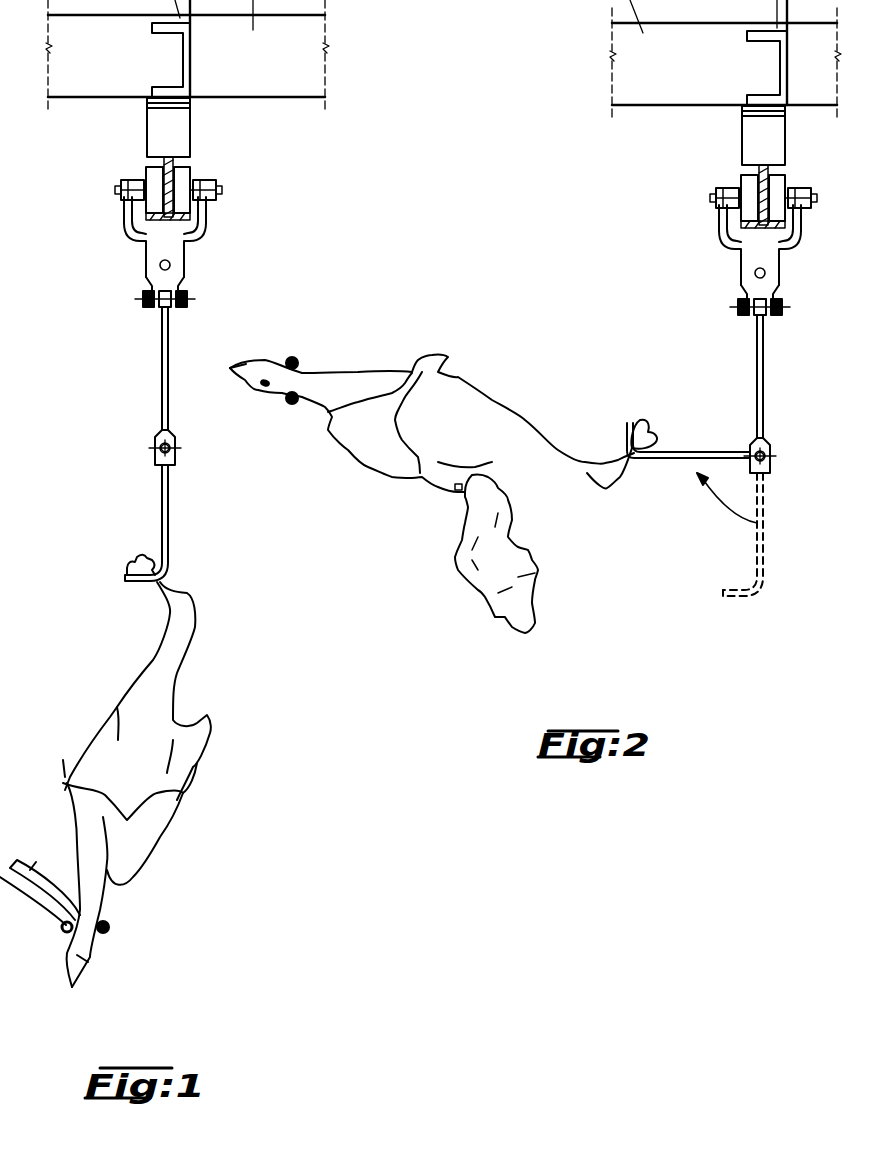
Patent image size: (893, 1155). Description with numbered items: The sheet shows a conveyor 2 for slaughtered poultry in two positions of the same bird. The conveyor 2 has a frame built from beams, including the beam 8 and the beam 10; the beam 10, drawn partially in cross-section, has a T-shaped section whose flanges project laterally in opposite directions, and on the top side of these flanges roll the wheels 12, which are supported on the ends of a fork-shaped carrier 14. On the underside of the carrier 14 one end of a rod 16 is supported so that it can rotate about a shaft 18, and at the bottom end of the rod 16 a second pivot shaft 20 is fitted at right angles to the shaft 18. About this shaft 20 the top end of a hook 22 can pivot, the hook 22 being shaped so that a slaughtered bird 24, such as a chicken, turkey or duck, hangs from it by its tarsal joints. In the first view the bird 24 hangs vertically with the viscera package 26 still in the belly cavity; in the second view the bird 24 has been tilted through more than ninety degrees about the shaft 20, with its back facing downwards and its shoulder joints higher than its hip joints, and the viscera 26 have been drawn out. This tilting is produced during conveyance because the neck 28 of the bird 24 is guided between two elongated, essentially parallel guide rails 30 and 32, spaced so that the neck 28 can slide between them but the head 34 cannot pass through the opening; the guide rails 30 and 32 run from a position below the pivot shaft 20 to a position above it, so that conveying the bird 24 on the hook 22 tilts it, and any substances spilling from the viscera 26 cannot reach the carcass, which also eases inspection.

In FIG. 1, the conveyor 2 is at (332, 165).
In FIG. 2, the conveyor 2 is at (578, 165).
In FIG. 1, the beam 8 is at (211, 127).
In FIG. 2, the beam 8 is at (698, 135).
In FIG. 1, the beam 10 is at (109, 170).
In FIG. 2, the beam 10 is at (690, 191).
In FIG. 1, the wheels 12 is at (167, 190).
In FIG. 2, the wheels 12 is at (714, 201).
In FIG. 1, the fork-shaped carrier 14 is at (205, 244).
In FIG. 2, the fork-shaped carrier 14 is at (706, 252).
In FIG. 1, the rod 16 is at (107, 368).
In FIG. 2, the rod 16 is at (687, 376).
In FIG. 1, the shaft 18 is at (120, 301).
In FIG. 2, the shaft 18 is at (701, 302).
In FIG. 1, the second pivot shaft 20 is at (113, 423).
In FIG. 2, the second pivot shaft 20 is at (694, 427).
In FIG. 1, the hook 22 is at (107, 523).
In FIG. 2, the hook 22 is at (687, 509).
In FIG. 1, the slaughtered bird 24 is at (265, 735).
In FIG. 2, the slaughtered bird 24 is at (415, 320).
In FIG. 2, the viscera package 26 is at (535, 573).
In FIG. 1, the neck 28 is at (100, 922).
In FIG. 2, the neck 28 is at (300, 377).
In FIG. 1, the guide rail 30 is at (40, 917).
In FIG. 2, the guide rail 30 is at (297, 357).
In FIG. 1, the guide rail 32 is at (110, 927).
In FIG. 2, the guide rail 32 is at (291, 404).
In FIG. 1, the head 34 is at (86, 957).
In FIG. 2, the head 34 is at (259, 361).